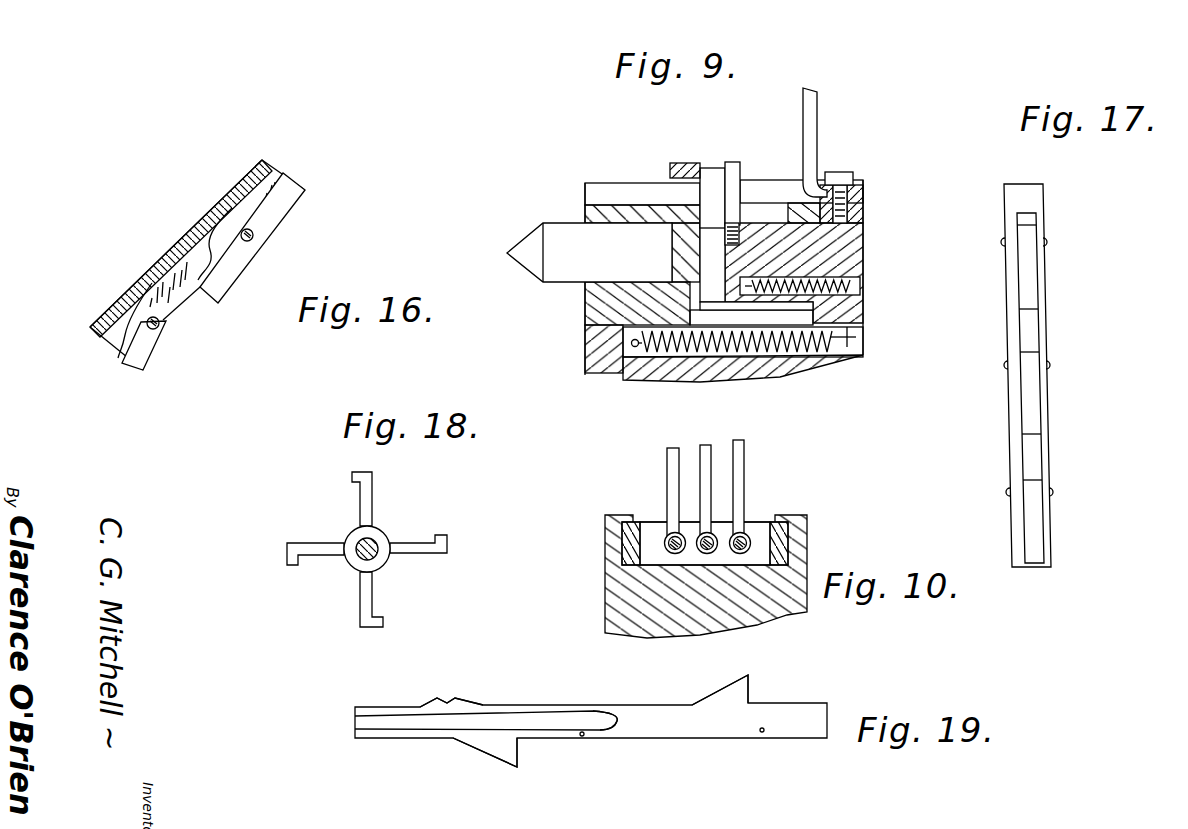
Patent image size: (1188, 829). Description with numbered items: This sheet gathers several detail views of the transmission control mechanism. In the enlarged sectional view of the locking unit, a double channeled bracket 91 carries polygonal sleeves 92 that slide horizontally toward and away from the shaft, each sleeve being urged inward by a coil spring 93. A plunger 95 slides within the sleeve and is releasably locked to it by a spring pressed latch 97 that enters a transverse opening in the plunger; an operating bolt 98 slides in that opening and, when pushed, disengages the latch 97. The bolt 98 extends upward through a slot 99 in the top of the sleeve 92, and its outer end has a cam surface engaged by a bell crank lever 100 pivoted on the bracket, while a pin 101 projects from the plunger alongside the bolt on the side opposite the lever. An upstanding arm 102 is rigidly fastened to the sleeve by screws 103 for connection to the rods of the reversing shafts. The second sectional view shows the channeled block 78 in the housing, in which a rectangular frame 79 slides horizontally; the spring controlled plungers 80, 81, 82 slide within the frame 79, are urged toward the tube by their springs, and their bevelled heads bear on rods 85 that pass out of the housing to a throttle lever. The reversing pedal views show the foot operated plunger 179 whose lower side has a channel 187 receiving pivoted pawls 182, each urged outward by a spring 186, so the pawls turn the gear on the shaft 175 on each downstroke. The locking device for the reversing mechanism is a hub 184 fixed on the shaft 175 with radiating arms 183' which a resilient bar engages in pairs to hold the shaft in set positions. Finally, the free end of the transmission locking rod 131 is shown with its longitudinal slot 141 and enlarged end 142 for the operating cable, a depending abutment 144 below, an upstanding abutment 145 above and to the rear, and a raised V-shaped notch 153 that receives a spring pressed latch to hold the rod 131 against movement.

In FIG. 9, the double channeled bracket 91 is at (600, 348).
In FIG. 9, the polygonal sleeves 92 is at (865, 300).
In FIG. 9, the coil springs 93 is at (638, 348).
In FIG. 9, the plunger 95 is at (556, 285).
In FIG. 9, the spring pressed latches 97 is at (708, 278).
In FIG. 9, the operating bolts 98 is at (712, 168).
In FIG. 9, the slot 99 is at (760, 210).
In FIG. 9, the bell crank levers 100 is at (686, 163).
In FIG. 9, the pin 101 is at (735, 165).
In FIG. 9, the upstanding arm 102 is at (812, 101).
In FIG. 9, the screws 103 is at (843, 178).
In FIG. 10, the channeled block 78 is at (612, 585).
In FIG. 10, the rectangular frame 79 is at (800, 534).
In FIG. 10, the spring controlled plunger 80 is at (668, 538).
In FIG. 10, the spring controlled plunger 81 is at (710, 538).
In FIG. 10, the spring controlled plunger 82 is at (743, 537).
In FIG. 10, the rods 85 is at (705, 466).
In FIG. 16, the foot operated plunger 179 is at (252, 173).
In FIG. 17, the foot operated plunger 179 is at (1032, 193).
In FIG. 16, the pivoted pawls 182 is at (222, 276).
In FIG. 17, the pivoted pawls 182 is at (1027, 275).
In FIG. 16, the springs 186 is at (201, 230).
In FIG. 16, the channel 187 is at (287, 195).
In FIG. 17, the channel 187 is at (1030, 338).
In FIG. 18, the shaft 175 is at (387, 560).
In FIG. 18, the radiating arms 183' is at (367, 549).
In FIG. 18, the hub 184 is at (357, 560).
In FIG. 19, the slidable rod 131 is at (703, 730).
In FIG. 19, the slot 141 is at (395, 718).
In FIG. 19, the enlargement 142 is at (605, 718).
In FIG. 19, the abutment 144 is at (505, 750).
In FIG. 19, the upstanding abutment 145 is at (737, 687).
In FIG. 19, the V-shaped notch 153 is at (453, 698).